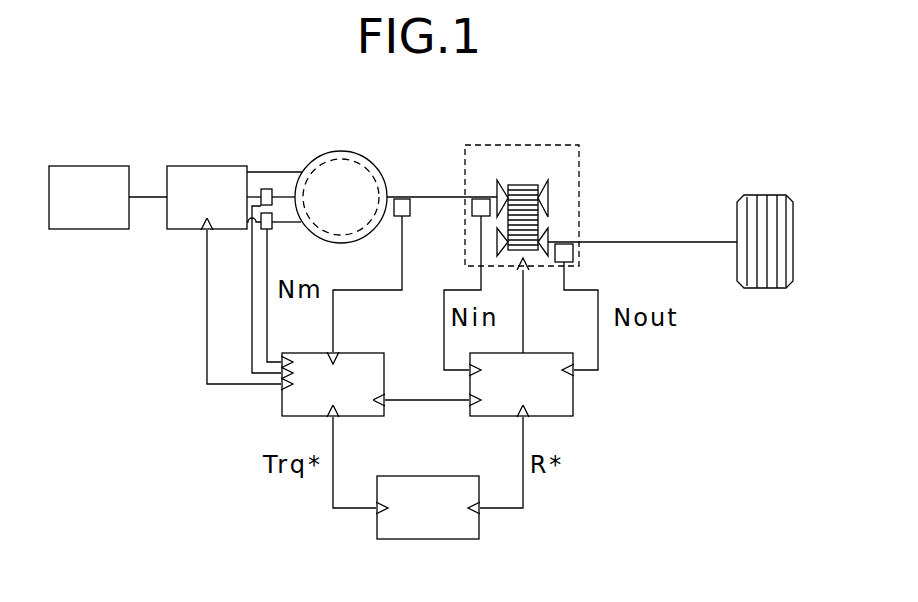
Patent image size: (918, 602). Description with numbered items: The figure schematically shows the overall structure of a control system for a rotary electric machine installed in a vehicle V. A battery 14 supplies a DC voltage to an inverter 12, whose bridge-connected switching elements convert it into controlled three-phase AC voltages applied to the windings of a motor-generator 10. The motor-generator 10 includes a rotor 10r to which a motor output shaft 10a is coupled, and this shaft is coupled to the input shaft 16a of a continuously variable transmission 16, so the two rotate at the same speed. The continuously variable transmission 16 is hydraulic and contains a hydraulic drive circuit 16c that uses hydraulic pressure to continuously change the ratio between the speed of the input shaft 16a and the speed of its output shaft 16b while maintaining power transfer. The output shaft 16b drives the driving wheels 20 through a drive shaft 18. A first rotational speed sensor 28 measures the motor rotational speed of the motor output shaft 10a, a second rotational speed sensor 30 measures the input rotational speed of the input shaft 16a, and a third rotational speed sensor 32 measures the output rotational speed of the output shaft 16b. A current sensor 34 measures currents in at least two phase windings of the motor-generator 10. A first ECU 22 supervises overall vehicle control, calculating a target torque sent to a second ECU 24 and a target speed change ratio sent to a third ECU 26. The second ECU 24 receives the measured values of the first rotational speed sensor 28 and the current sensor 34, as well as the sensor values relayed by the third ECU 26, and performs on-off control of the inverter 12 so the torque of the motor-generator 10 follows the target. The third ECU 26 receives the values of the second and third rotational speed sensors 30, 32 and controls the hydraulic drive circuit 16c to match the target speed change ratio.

The motor-generator 10 is at (338, 151).
The rotor 10r is at (358, 162).
The motor output shaft 10a is at (420, 197).
The inverter 12 is at (238, 166).
The battery 14 is at (122, 166).
The continuously variable transmission 16 is at (579, 145).
The input shaft 16a is at (485, 197).
The output shaft 16b is at (563, 241).
The hydraulic drive circuit 16c is at (551, 220).
The drive shaft 18 is at (692, 242).
The driving wheels 20 is at (773, 195).
The first ECU 22 is at (461, 476).
The second ECU 24 is at (366, 353).
The third ECU 26 is at (556, 353).
The first rotational speed sensor 28 is at (410, 210).
The second rotational speed sensor 30 is at (471, 212).
The third rotational speed sensor 32 is at (573, 255).
The current sensor 34 is at (272, 203).
The vehicle V is at (685, 436).